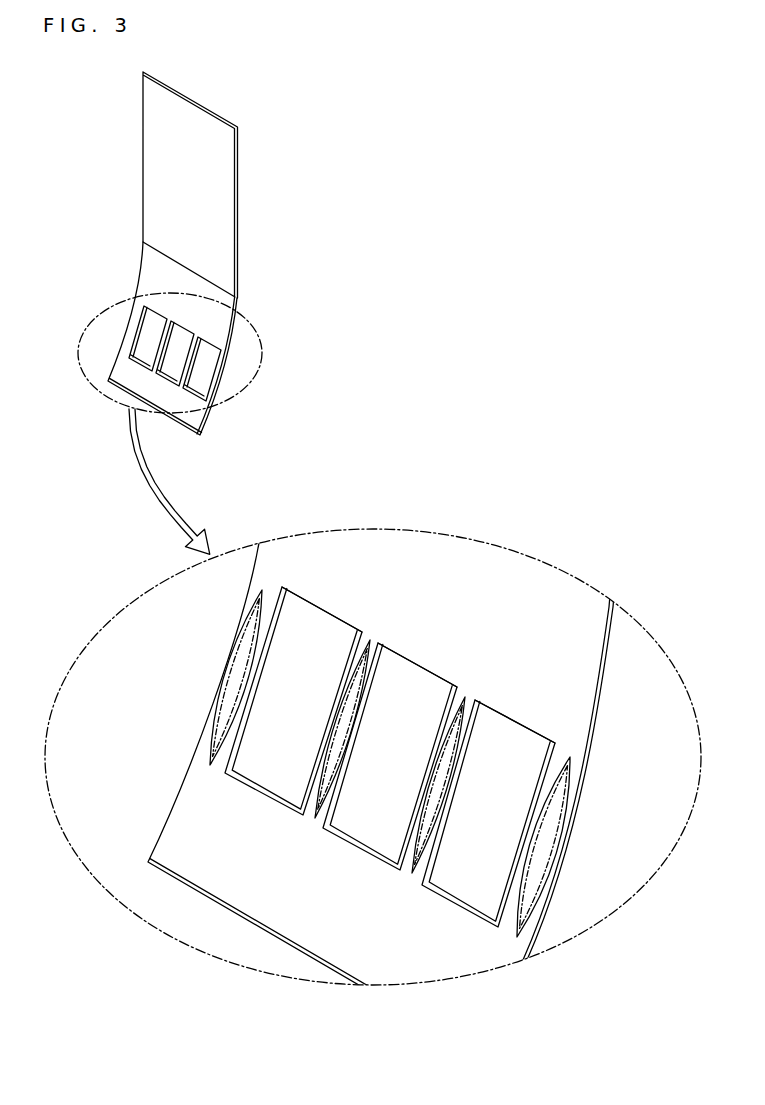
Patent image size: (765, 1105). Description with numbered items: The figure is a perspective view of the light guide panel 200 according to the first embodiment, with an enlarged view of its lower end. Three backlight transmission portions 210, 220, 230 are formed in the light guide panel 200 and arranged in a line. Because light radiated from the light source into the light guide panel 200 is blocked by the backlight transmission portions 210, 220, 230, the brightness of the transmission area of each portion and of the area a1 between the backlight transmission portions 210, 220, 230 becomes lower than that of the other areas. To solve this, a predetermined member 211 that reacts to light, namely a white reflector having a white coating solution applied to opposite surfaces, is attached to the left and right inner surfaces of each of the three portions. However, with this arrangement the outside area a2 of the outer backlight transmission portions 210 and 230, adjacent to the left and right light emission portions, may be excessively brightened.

The light guide panel 200 is at (275, 170).
The backlight transmission portion 210 is at (146, 347).
The backlight transmission portion 220 is at (174, 364).
The backlight transmission portion 230 is at (201, 382).
The predetermined member 211 is at (270, 662).
The area between the backlight transmission portions a1 is at (350, 682).
The outside area of the backlight transmission portions a2 is at (570, 755).